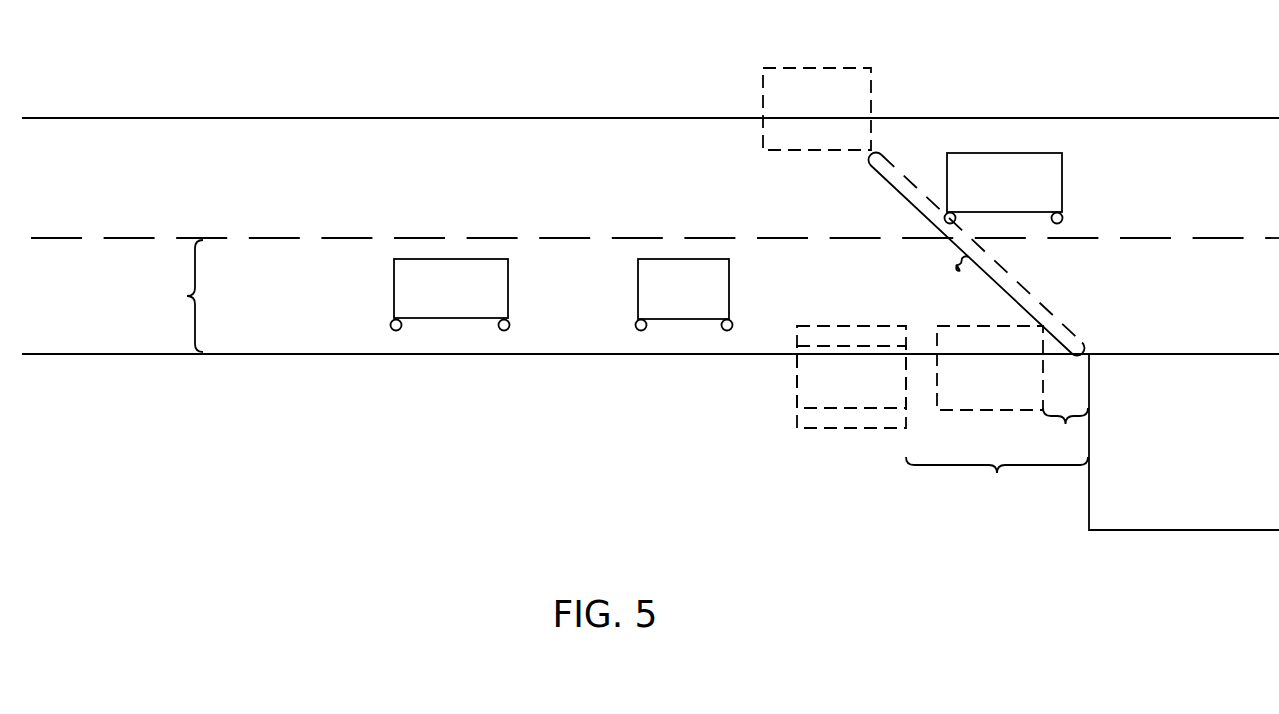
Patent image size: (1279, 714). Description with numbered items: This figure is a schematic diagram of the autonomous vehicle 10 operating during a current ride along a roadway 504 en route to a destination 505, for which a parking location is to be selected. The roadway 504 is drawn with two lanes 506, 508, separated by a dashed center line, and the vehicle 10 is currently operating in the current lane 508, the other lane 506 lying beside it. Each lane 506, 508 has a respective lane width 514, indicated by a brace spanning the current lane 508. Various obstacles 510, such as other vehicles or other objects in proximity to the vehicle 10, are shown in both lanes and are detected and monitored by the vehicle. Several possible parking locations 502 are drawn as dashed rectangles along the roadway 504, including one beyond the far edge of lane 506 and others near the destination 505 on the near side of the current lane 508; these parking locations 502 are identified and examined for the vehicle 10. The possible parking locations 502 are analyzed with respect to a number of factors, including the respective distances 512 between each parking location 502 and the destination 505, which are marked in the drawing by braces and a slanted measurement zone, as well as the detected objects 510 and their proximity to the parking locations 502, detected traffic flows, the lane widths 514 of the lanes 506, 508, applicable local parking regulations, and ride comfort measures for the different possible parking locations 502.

The autonomous vehicle 10 is at (667, 302).
The possible parking locations 502 is at (793, 107).
The roadway 504 is at (1122, 142).
The destination 505 is at (1169, 457).
The lane 506 is at (1181, 202).
The current lane 508 is at (1181, 311).
The obstacles 510 is at (421, 304).
The distances 512 is at (978, 332).
The lane width 514 is at (169, 296).